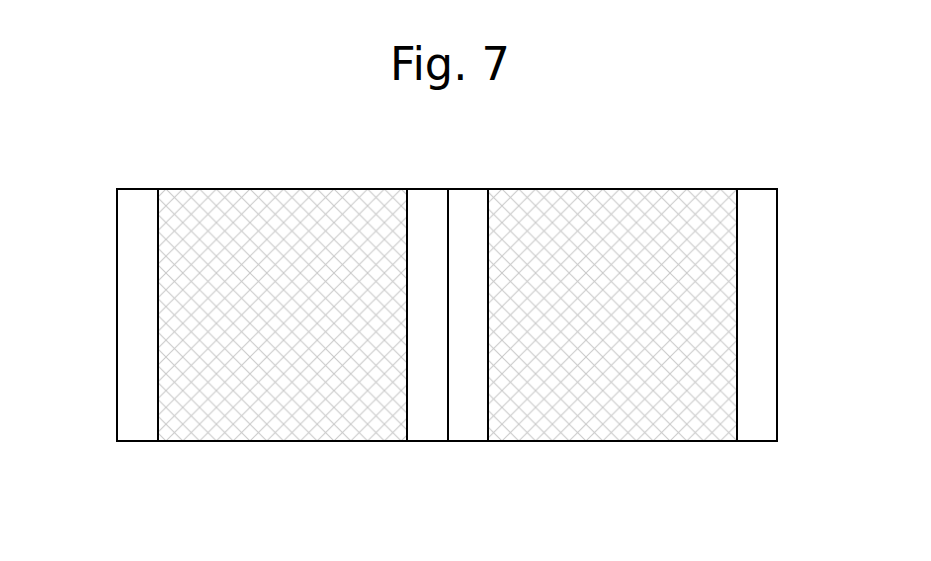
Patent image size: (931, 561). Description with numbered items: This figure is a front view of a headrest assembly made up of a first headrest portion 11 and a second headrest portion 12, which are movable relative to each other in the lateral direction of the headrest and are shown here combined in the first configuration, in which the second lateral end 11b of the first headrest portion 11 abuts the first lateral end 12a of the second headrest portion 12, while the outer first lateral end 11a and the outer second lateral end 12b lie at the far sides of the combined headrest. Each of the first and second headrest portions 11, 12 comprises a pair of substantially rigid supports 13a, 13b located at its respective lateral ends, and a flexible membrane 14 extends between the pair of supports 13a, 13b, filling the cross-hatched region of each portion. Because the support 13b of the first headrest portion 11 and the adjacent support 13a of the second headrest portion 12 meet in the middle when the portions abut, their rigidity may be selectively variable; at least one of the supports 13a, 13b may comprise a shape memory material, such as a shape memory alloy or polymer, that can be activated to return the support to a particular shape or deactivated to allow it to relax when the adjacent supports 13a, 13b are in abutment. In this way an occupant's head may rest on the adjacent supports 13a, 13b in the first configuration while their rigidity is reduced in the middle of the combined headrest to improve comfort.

The first headrest portion 11 is at (222, 210).
The first lateral end of the first headrest portion 11a is at (117, 288).
The second lateral end of the first headrest portion 11b is at (446, 208).
The second headrest portion 12 is at (647, 220).
The first lateral end of the second headrest portion 12a is at (448, 228).
The second lateral end of the second headrest portion 12b is at (777, 290).
The support 13a is at (138, 423).
The support 13b is at (430, 430).
The flexible membrane 14 is at (278, 415).